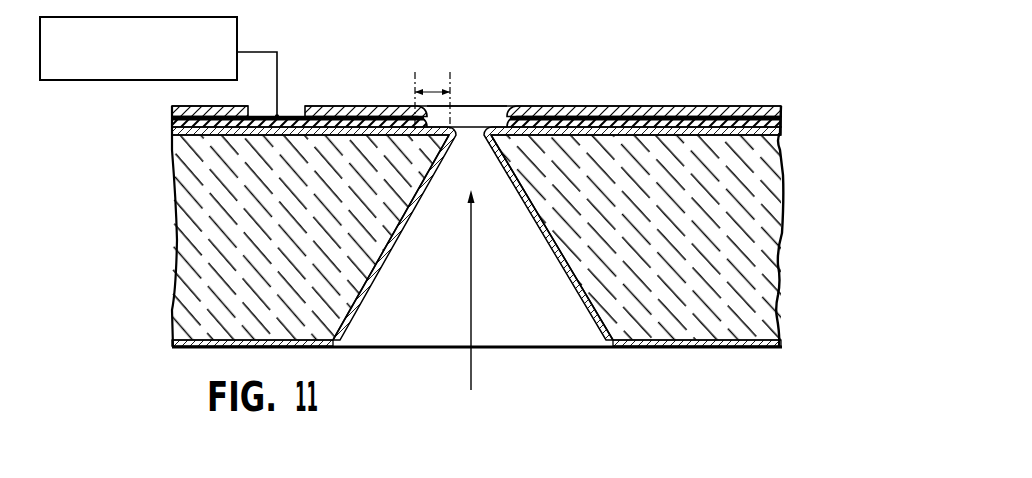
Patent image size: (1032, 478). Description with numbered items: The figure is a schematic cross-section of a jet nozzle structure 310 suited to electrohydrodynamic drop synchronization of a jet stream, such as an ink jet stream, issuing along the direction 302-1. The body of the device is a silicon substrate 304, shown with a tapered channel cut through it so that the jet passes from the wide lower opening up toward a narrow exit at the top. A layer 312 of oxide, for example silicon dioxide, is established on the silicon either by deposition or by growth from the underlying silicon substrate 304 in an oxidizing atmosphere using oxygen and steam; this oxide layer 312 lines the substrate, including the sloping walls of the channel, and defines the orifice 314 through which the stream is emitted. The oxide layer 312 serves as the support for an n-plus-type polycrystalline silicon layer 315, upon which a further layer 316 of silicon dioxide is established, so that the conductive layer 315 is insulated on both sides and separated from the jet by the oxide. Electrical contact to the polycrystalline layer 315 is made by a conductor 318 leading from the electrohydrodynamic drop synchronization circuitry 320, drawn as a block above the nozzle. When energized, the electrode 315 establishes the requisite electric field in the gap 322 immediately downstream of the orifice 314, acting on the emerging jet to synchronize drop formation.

The acoustic wave / ultrasonic beam direction 302-1 is at (472, 378).
The silicon substrate 304 is at (773, 220).
The ultrasonic transducer 310 is at (512, 90).
The oxide layer 312 is at (780, 132).
The orifice 314 is at (463, 132).
The n⁺-type polycrystalline Si layer 315 is at (782, 120).
The SiO₂ layer 316 is at (695, 108).
The conductor 318 is at (278, 88).
The electrohydrodynamic drop synchronization circuitry 320 is at (234, 37).
The gap 322 is at (436, 92).